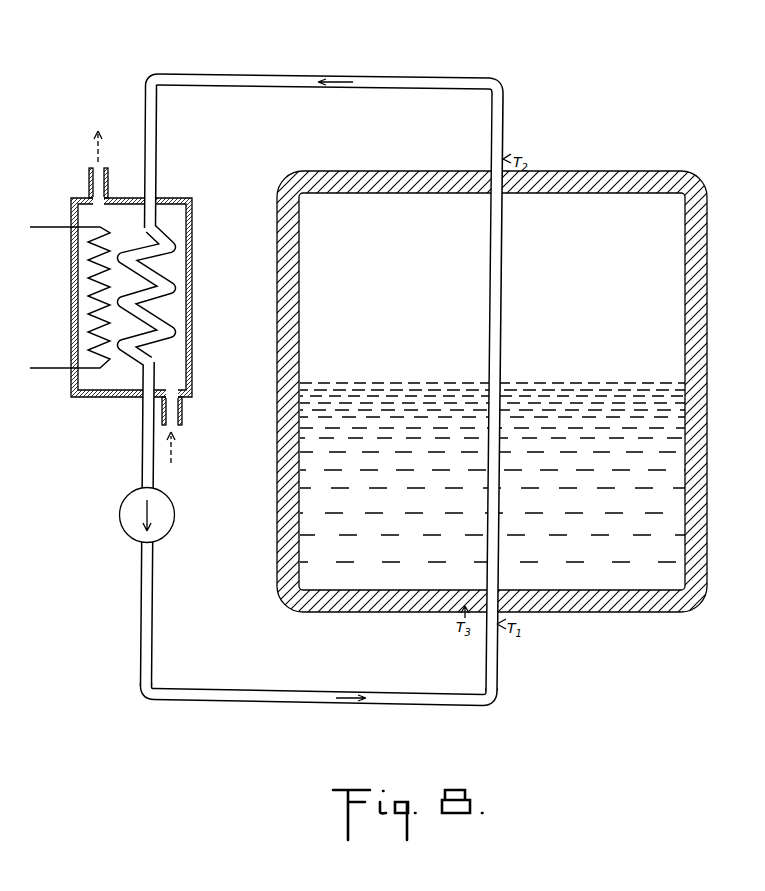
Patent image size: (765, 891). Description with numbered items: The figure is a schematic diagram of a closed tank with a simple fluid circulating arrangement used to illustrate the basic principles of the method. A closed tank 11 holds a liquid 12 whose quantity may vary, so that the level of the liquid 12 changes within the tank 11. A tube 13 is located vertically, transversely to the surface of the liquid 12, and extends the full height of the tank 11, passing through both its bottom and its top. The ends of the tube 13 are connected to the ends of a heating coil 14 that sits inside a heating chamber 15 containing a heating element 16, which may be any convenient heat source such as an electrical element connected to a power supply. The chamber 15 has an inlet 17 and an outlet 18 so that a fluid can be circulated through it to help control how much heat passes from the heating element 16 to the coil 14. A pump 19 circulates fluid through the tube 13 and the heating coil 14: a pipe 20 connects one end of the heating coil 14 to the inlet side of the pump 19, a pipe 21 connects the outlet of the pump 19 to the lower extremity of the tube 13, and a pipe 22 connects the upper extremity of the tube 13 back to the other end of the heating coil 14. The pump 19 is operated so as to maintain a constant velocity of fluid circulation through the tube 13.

The closed tank 11 is at (626, 609).
The liquid 12 is at (584, 402).
The tube 13 is at (503, 281).
The heating coil 14 is at (150, 272).
The heating chamber 15 is at (172, 207).
The heating element 16 is at (92, 298).
The inlet 17 is at (181, 413).
The outlet 18 is at (90, 182).
The pump 19 is at (124, 523).
The pipe 20 is at (141, 450).
The pipe 21 is at (258, 697).
The pipe 22 is at (290, 82).